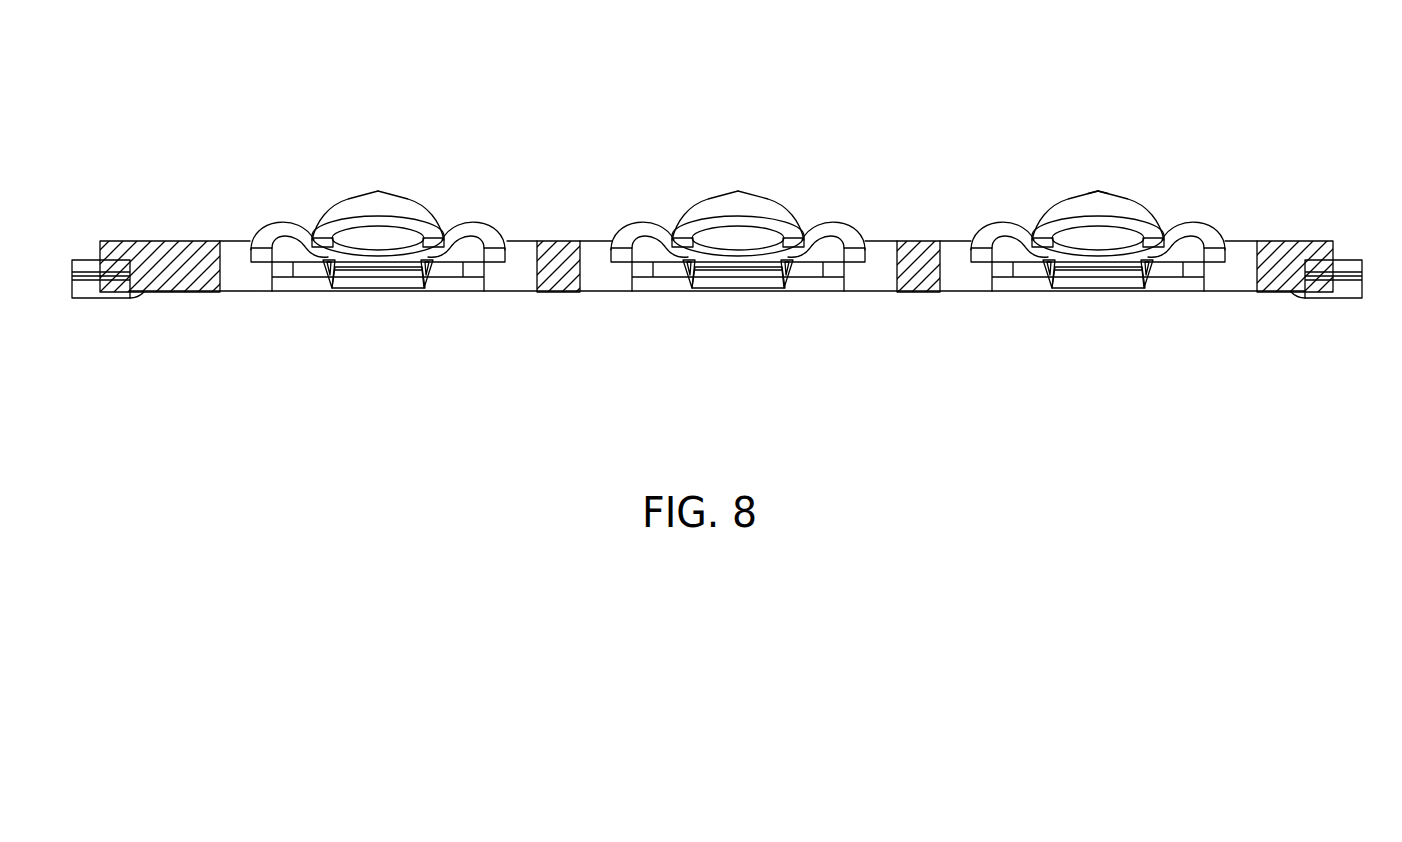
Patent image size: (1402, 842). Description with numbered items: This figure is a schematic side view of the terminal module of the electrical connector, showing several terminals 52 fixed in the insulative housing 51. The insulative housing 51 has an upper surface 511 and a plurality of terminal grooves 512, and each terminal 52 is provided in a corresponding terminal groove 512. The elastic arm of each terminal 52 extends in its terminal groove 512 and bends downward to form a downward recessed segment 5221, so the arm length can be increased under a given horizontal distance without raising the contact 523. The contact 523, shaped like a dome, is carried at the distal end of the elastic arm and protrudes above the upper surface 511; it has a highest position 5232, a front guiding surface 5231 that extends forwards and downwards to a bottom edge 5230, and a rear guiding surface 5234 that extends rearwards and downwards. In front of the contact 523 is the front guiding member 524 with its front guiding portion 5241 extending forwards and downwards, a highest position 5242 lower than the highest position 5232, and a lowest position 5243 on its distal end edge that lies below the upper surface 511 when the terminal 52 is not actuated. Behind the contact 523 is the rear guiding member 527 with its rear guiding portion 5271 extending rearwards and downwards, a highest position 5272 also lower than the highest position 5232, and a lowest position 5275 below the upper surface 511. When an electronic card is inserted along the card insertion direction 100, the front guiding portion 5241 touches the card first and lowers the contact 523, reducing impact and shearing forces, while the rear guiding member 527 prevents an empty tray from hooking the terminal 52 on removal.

The card insertion direction 100 is at (585, 149).
The insulative housing 51 is at (1338, 243).
The upper surface 511 is at (1243, 241).
The terminal groove 512 is at (954, 284).
The terminal 52 is at (1188, 73).
The contact 523 is at (1127, 195).
The front guiding surface 5231 is at (1151, 200).
The highest position of the contact 5232 is at (1098, 190).
The rear guiding surface 5234 is at (1058, 202).
The front guiding member 524 is at (1210, 225).
The front guiding portion 5241 is at (1246, 258).
The highest position of the front guiding member 5242 is at (1193, 224).
The lowest position of the front guiding member 5243 is at (1216, 262).
The rear guiding member 527 is at (978, 224).
The rear guiding portion 5271 is at (976, 244).
The highest position of the rear guiding member 5272 is at (1000, 223).
The lowest position of the rear guiding member 5275 is at (977, 262).
The downward recessed segment 5221 is at (1090, 292).
The bottom edge 5230 is at (1156, 249).